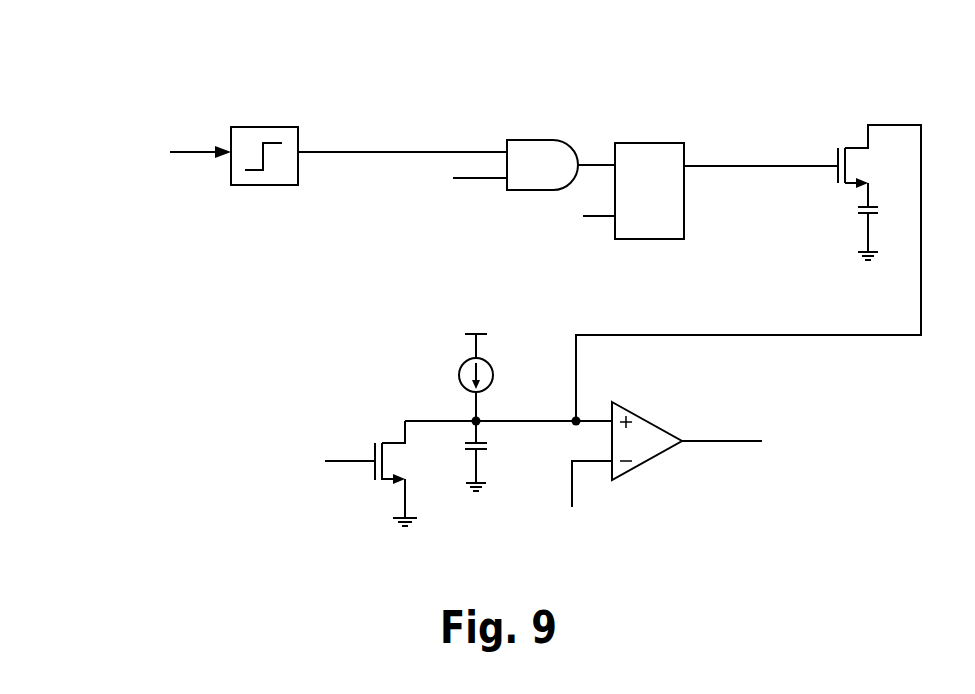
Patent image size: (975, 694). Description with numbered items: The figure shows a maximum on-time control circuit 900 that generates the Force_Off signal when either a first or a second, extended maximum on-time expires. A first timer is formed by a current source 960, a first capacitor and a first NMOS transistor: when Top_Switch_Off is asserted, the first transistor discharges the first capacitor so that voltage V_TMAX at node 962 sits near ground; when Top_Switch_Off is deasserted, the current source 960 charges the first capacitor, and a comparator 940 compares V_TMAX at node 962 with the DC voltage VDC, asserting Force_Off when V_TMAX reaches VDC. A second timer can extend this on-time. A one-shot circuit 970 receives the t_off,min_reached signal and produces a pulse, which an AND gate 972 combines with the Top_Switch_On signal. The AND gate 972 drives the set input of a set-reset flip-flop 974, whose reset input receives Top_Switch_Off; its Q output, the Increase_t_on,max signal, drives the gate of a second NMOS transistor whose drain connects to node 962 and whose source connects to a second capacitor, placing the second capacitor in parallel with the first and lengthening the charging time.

The maximum on-time control circuit 900 is at (716, 79).
The one-shot circuit 970 is at (261, 185).
The AND gate 972 is at (555, 178).
The set-reset flip-flop 974 is at (640, 143).
The current source 960 is at (459, 375).
The node 962 is at (473, 418).
The comparator 940 is at (647, 460).